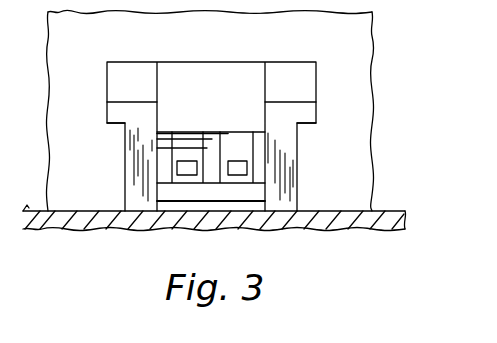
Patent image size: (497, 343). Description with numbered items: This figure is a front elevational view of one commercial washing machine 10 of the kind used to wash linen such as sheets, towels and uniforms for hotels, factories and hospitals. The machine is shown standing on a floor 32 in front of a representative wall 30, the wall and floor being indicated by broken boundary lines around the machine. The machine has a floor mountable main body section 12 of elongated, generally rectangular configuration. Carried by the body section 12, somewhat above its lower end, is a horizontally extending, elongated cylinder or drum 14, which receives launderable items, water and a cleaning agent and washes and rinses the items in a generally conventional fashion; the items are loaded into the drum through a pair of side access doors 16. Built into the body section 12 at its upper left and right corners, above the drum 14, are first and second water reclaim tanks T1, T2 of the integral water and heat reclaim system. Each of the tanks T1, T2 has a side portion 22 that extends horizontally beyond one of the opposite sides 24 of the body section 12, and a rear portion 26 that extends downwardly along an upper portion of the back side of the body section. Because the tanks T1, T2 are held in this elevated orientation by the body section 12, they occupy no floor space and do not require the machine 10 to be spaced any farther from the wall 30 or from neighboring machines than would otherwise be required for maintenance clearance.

The commercial washing machine 10 is at (210, 116).
The main body section 12 is at (298, 161).
The drum 14 is at (213, 132).
The side access doors 16 is at (182, 167).
The side portion 22 is at (107, 100).
The opposite sides 24 is at (126, 148).
The rear portion 26 is at (107, 113).
The wall 30 is at (90, 46).
The floor 32 is at (396, 211).
The first water reclaim tank T1 is at (106, 70).
The second water reclaim tank T2 is at (317, 84).